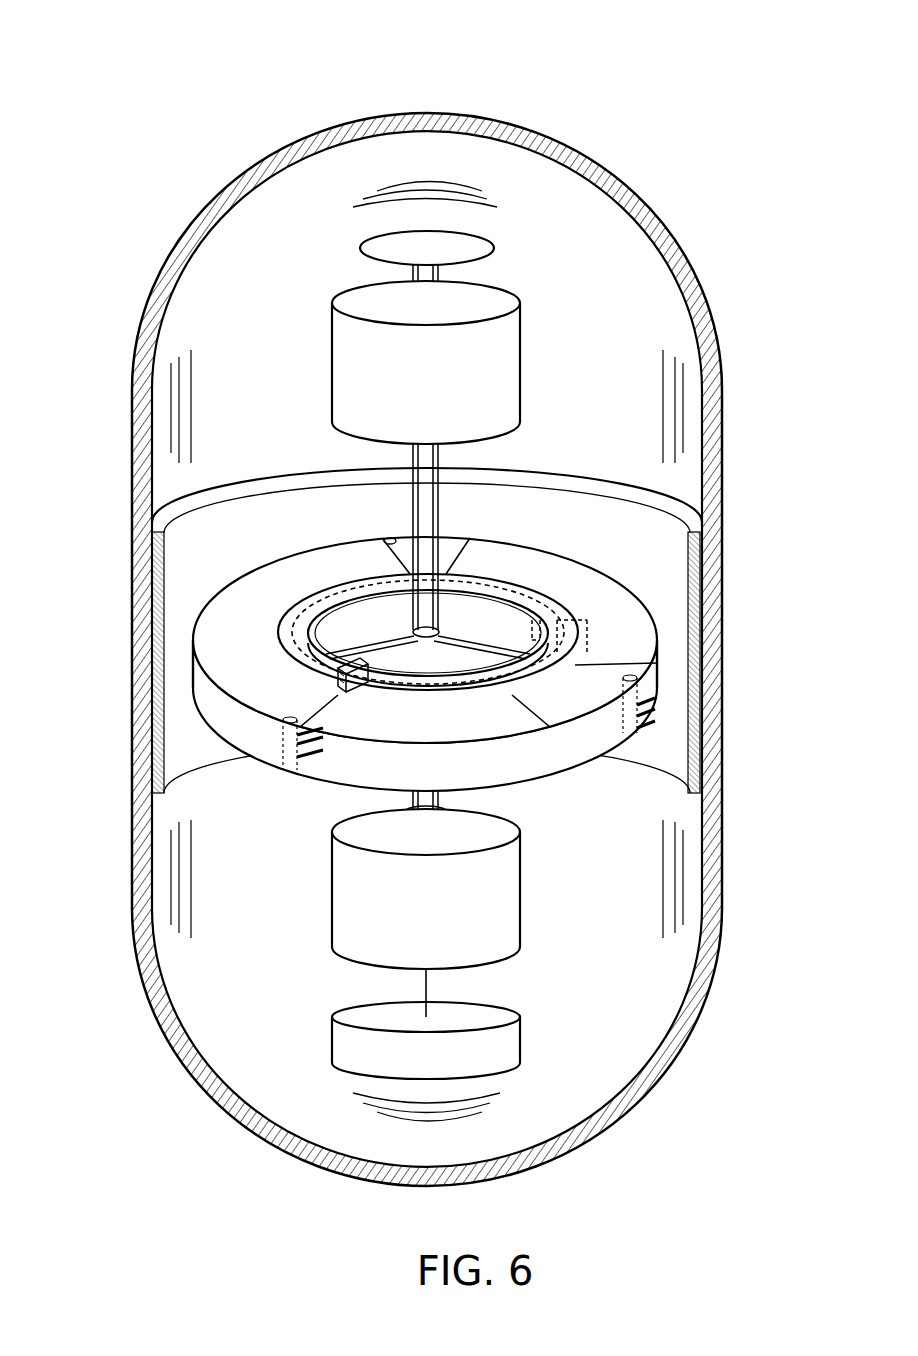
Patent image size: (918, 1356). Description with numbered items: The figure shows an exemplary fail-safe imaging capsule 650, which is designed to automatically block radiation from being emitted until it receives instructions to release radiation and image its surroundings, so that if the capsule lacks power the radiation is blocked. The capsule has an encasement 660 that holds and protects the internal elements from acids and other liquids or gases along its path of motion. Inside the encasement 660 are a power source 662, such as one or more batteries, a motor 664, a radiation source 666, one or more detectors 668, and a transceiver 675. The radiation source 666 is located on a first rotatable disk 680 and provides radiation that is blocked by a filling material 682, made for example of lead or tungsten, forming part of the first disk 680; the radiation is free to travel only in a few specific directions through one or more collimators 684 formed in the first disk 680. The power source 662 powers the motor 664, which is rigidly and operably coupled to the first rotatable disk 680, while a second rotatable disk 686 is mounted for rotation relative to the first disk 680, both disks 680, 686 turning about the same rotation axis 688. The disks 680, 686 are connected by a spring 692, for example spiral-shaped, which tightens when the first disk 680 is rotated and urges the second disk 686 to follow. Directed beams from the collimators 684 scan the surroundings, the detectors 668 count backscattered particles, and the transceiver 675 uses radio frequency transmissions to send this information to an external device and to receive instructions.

The imaging capsule 650 is at (183, 68).
The encasement 660 is at (722, 897).
The power source 662 is at (522, 1035).
The motor 664 is at (522, 885).
The radiation source 666 is at (412, 623).
The detector 668 is at (521, 352).
The transceiver 675 is at (494, 248).
The first rotatable disk 680 is at (292, 657).
The filling material 682 is at (503, 617).
The collimator 684 is at (338, 672).
The second rotatable disk 686 is at (587, 745).
The rotation axis 688 is at (420, 516).
The spring 692 is at (563, 617).